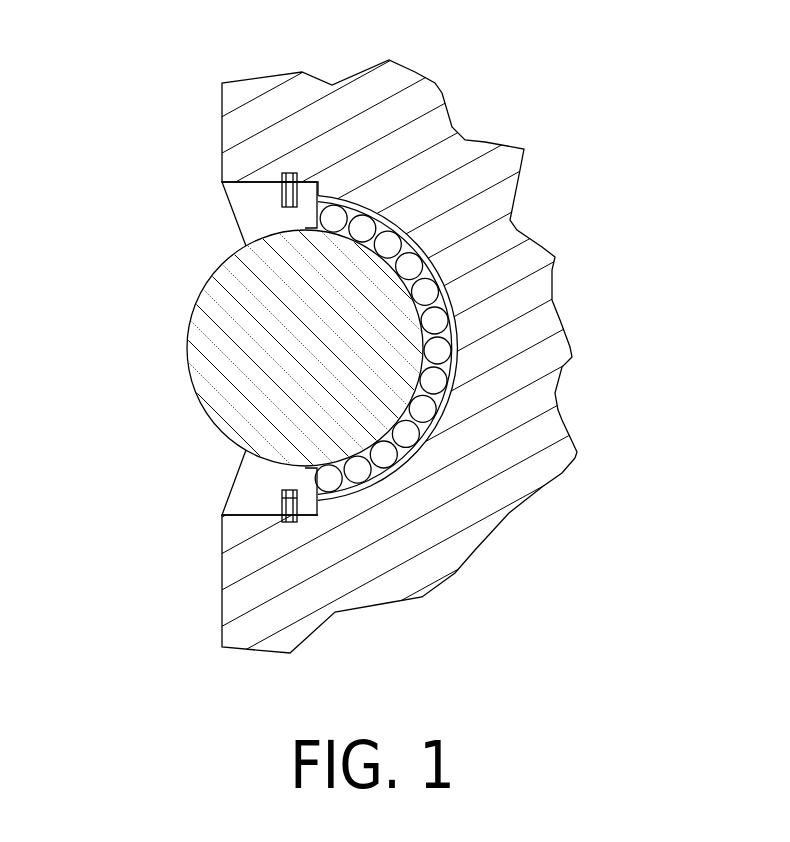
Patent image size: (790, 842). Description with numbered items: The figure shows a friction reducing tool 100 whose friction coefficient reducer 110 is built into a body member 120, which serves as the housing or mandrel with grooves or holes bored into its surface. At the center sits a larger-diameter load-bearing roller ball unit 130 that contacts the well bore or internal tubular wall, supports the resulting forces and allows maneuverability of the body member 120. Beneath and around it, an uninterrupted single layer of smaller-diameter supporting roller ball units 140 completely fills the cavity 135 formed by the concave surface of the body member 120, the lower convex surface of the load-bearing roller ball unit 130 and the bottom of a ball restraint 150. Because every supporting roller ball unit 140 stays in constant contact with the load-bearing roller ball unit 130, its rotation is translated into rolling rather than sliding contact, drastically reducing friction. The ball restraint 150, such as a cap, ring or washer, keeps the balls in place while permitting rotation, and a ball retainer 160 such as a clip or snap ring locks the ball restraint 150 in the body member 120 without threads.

The friction reducing tool 100 is at (221, 578).
The friction coefficient reducer 110 is at (185, 368).
The body member 120 is at (507, 290).
The load-bearing roller ball unit 130 is at (257, 337).
The cavity 135 is at (448, 358).
The supporting roller ball units 140 is at (335, 198).
The ball restraint 150 is at (237, 220).
The ball retainer 160 is at (289, 173).